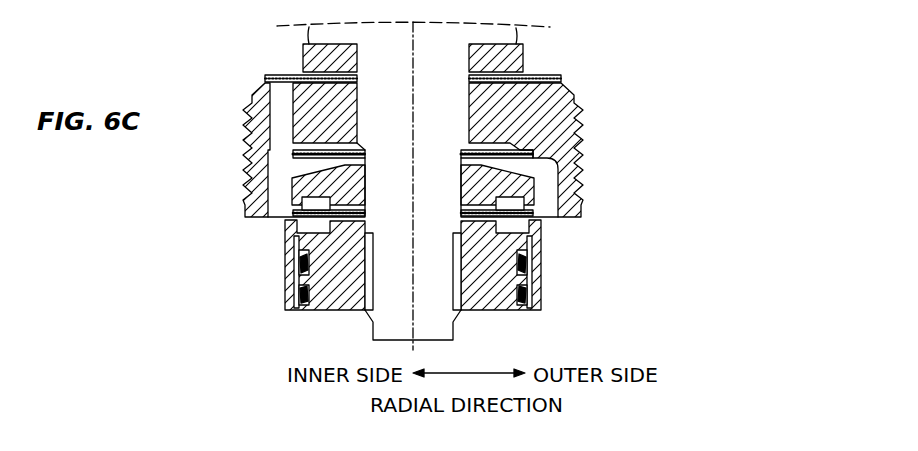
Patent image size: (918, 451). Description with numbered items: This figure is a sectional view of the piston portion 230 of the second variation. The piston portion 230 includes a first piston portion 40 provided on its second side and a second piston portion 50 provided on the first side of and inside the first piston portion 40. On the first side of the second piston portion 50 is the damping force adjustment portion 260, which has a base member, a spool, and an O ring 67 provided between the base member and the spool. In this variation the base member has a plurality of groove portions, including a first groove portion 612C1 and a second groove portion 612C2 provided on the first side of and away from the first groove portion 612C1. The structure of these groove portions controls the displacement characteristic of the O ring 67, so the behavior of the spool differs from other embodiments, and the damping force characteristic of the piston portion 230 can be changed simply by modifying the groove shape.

The first piston portion 40 is at (255, 88).
The second piston portion 50 is at (266, 188).
The piston portion 230 is at (613, 60).
The damping force adjustment portion 260 is at (417, 280).
The O ring 67 is at (538, 265).
The first groove portion 612C1 is at (538, 260).
The second groove portion 612C2 is at (537, 298).